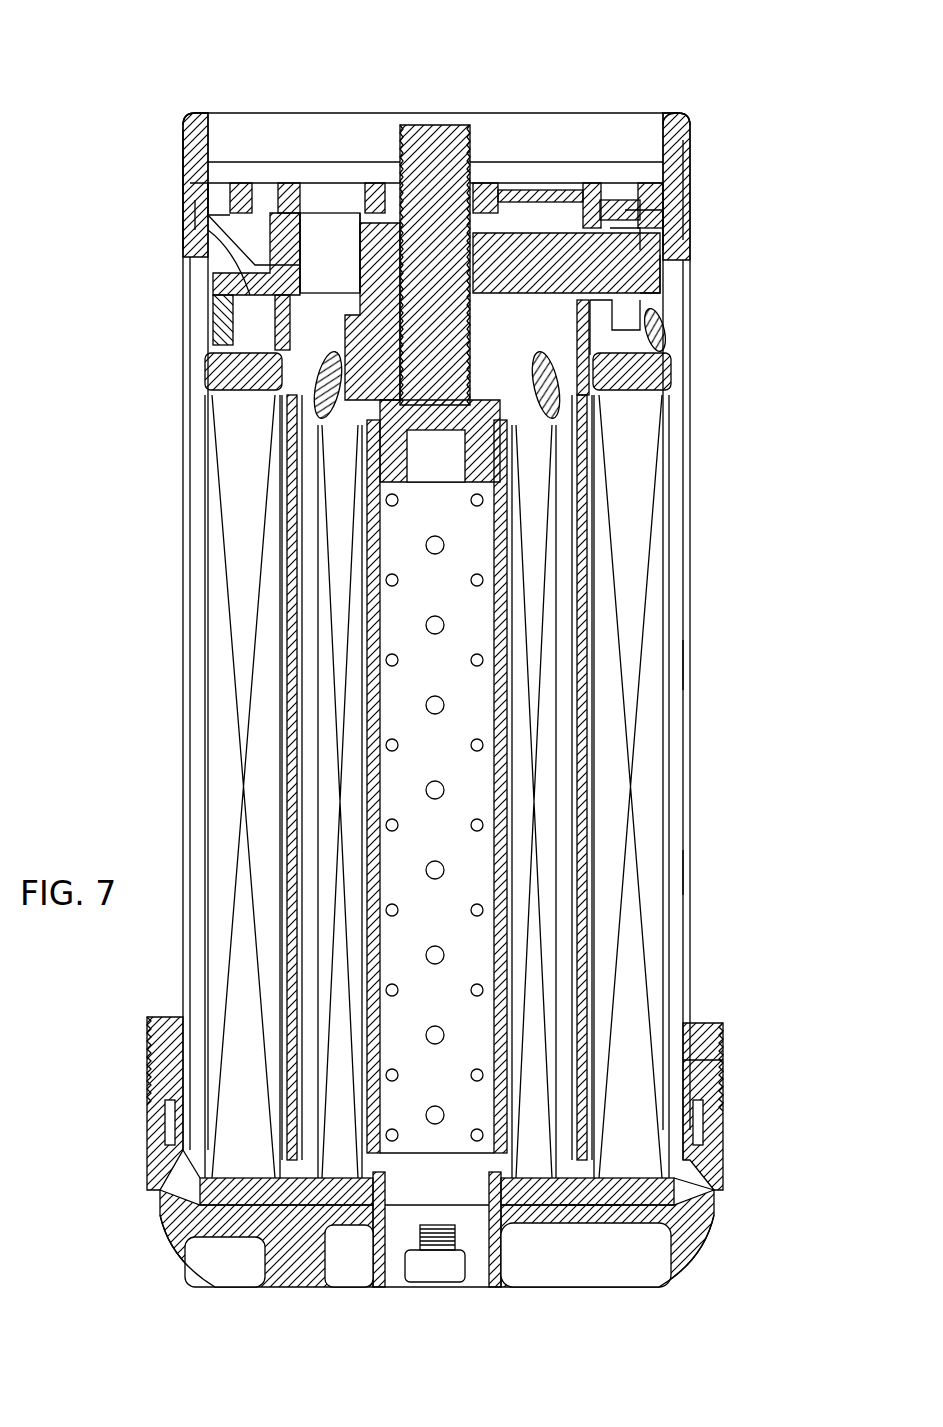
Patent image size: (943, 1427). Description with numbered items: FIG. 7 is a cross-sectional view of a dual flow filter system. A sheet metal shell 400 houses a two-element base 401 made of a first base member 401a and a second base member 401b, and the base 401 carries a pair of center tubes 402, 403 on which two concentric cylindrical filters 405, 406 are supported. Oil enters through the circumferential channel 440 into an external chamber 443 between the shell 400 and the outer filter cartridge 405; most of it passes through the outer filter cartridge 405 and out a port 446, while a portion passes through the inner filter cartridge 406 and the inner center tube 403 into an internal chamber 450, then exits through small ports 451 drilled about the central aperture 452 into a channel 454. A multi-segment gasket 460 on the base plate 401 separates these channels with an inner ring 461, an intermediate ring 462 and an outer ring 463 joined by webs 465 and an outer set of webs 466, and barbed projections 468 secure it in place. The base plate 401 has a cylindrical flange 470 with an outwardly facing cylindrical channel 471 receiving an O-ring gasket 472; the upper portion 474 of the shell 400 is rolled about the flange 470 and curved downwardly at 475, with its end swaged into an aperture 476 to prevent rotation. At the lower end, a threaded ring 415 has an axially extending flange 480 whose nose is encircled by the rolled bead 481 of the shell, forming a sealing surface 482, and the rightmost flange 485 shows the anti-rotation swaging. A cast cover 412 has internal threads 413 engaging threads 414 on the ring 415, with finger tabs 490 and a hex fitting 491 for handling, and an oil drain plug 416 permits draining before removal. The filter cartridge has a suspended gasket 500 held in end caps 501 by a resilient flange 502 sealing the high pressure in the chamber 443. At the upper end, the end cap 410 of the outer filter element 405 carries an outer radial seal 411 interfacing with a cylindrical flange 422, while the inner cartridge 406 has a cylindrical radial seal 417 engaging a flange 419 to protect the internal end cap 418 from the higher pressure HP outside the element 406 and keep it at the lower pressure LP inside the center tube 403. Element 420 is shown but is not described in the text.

The sheet metal shell 400 is at (688, 748).
The two-element base 401 is at (664, 270).
The first base member 401a is at (228, 236).
The second base member 401b is at (278, 286).
The outer center tube 402 is at (277, 490).
The inner center tube 403 is at (460, 840).
The outer filter cartridge 405 is at (245, 733).
The inner filter cartridge 406 is at (533, 1058).
The end cap 410 is at (635, 396).
The outer radial seal 411 is at (655, 345).
The cover 412 is at (170, 1165).
The internal threads 413 is at (700, 1035).
The threads 414 is at (700, 1062).
The threaded ring 415 is at (700, 1100).
The oil drain plug 416 is at (440, 1268).
The cylindrical radial seal 417 is at (548, 356).
The internal end cap 418 is at (455, 432).
The flange 419 is at (535, 380).
The threaded shaft 420 is at (435, 165).
The cylindrical flange 422 is at (660, 330).
The circumferential channel 440 is at (610, 210).
The external chamber 443 is at (688, 664).
The port 446 is at (333, 213).
The internal chamber 450 is at (385, 1170).
The small ports 451 is at (392, 332).
The central aperture 452 is at (478, 268).
The channel 454 is at (480, 190).
The multi-segment gasket 460 is at (652, 210).
The inner ring 461 is at (375, 183).
The intermediate ring 462 is at (290, 195).
The outer ring 463 is at (240, 183).
The webs 465 is at (563, 200).
The outer set of webs 466 is at (680, 122).
The barbed projections 468 is at (650, 250).
The cylindrical flange 470 is at (196, 140).
The cylindrical channel 471 is at (196, 186).
The O-ring gasket 472 is at (202, 205).
The upper portion 474 is at (200, 116).
The rolled portion 475 is at (222, 180).
The aperture 476 is at (676, 160).
The axially extending flange 480 is at (185, 1145).
The rolled bead 481 is at (172, 1140).
The sealing surface 482 is at (700, 1182).
The rightmost flange 485 is at (692, 1130).
The finger tabs 490 is at (268, 1280).
The hex fitting 491 is at (490, 1268).
The suspended gasket 500 is at (183, 1215).
The end caps 501 is at (632, 1222).
The resilient flange 502 is at (700, 1212).
The lower pressure LP is at (417, 763).
The higher pressure HP is at (688, 870).